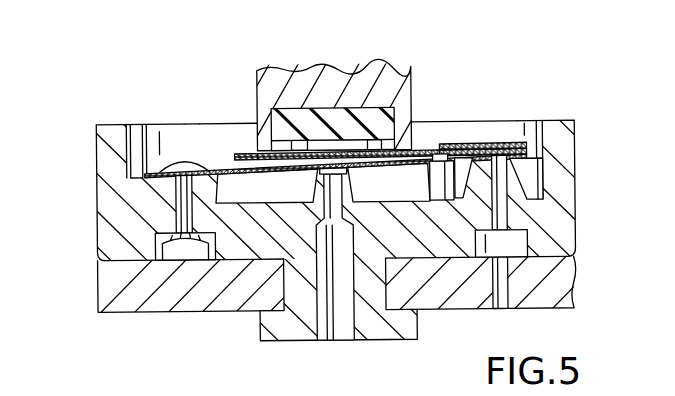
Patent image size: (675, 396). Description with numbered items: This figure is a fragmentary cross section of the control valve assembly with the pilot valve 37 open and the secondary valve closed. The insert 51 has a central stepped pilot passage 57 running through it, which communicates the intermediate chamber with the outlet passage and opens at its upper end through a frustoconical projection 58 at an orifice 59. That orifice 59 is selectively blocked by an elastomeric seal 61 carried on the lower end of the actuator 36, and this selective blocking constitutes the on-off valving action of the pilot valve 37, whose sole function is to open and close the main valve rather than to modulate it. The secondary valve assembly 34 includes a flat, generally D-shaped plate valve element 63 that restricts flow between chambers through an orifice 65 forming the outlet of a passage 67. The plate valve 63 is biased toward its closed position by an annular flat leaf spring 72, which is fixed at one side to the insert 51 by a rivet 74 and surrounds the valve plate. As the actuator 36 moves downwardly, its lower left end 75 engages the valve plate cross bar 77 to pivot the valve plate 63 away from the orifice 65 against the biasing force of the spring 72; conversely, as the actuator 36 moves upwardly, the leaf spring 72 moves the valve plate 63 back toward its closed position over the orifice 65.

The secondary valve assembly 34 is at (337, 199).
The actuator 36 is at (370, 78).
The pilot valve 37 is at (250, 126).
The insert 51 is at (107, 236).
The central stepped pilot passage 57 is at (333, 307).
The frustoconical projection 58 is at (313, 185).
The orifice 59 is at (347, 163).
The elastomeric seal 61 is at (332, 113).
The plate valve element 63 is at (462, 151).
The orifice 65 is at (503, 149).
The passage 67 is at (510, 214).
The annular flat leaf spring 72 is at (490, 148).
The rivet 74 is at (118, 196).
The lower left end of the actuator 75 is at (232, 166).
The valve plate cross bar 77 is at (243, 149).